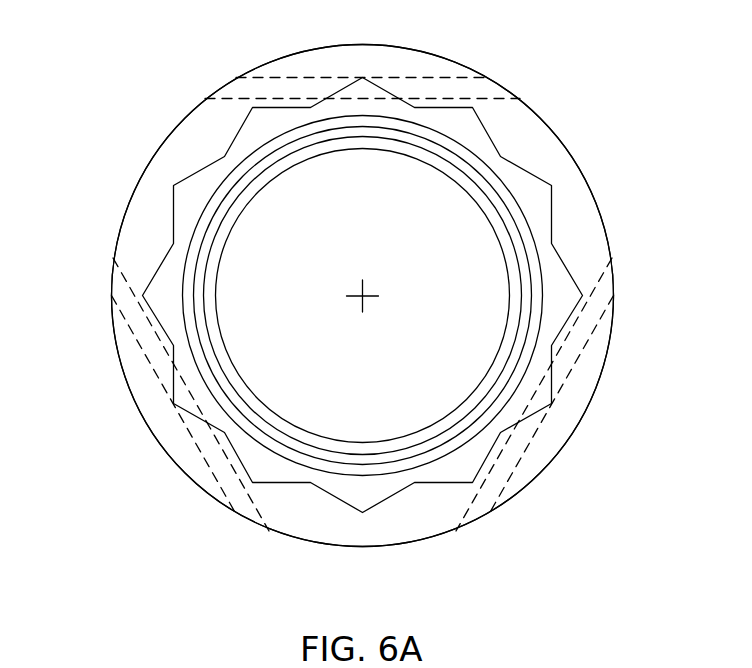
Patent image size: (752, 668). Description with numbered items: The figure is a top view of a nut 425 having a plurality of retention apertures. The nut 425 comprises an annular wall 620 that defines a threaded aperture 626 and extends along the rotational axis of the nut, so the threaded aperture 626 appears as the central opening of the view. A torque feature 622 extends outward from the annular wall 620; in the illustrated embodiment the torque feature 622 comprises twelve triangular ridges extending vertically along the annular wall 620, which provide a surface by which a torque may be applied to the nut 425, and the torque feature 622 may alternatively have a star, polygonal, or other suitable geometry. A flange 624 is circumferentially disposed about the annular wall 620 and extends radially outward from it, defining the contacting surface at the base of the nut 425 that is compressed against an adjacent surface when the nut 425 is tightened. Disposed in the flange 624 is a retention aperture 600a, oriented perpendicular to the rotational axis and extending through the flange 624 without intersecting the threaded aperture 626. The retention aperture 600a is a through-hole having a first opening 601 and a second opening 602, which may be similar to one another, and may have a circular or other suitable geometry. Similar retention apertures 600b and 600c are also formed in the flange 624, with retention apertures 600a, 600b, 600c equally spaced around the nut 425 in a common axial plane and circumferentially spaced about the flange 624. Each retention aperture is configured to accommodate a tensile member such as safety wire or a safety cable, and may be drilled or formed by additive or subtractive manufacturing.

The nut 425 is at (155, 182).
The retention aperture 600a is at (137, 342).
The retention aperture 600b is at (575, 370).
The retention aperture 600c is at (295, 78).
The first opening 601 is at (110, 278).
The second opening 602 is at (250, 518).
The annular wall 620 is at (533, 233).
The torque feature 622 is at (532, 172).
The flange 624 is at (419, 295).
The threaded aperture 626 is at (270, 178).